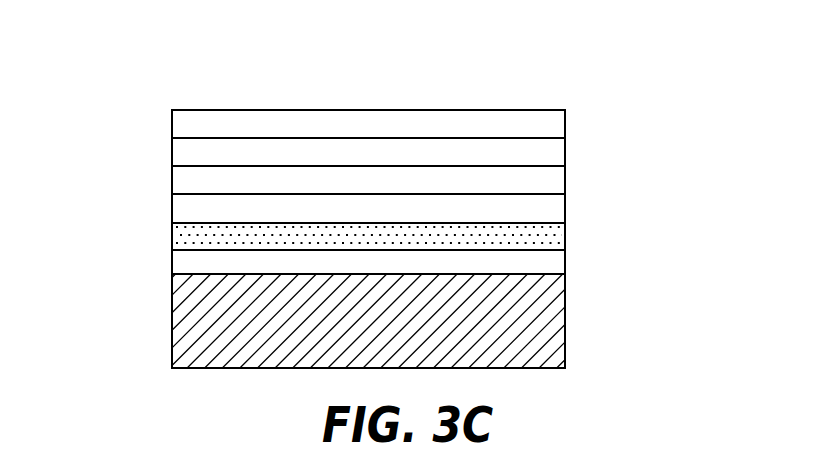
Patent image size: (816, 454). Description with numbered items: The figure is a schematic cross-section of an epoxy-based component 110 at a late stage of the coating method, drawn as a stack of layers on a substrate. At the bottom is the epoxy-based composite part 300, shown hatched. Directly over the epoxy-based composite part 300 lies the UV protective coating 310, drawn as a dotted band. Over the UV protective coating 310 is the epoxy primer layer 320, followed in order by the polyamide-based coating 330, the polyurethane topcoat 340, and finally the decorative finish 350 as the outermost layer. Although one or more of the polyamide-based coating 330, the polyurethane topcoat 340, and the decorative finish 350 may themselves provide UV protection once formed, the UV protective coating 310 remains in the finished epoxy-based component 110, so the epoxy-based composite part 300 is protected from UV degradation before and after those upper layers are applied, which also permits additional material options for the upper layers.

The epoxy-based component 110 is at (622, 120).
The epoxy-based composite part 300 is at (151, 252).
The UV protective coating 310 is at (552, 234).
The epoxy primer layer 320 is at (183, 206).
The polyamide-based coating 330 is at (184, 176).
The polyurethane topcoat 340 is at (188, 147).
The decorative finish 350 is at (188, 116).